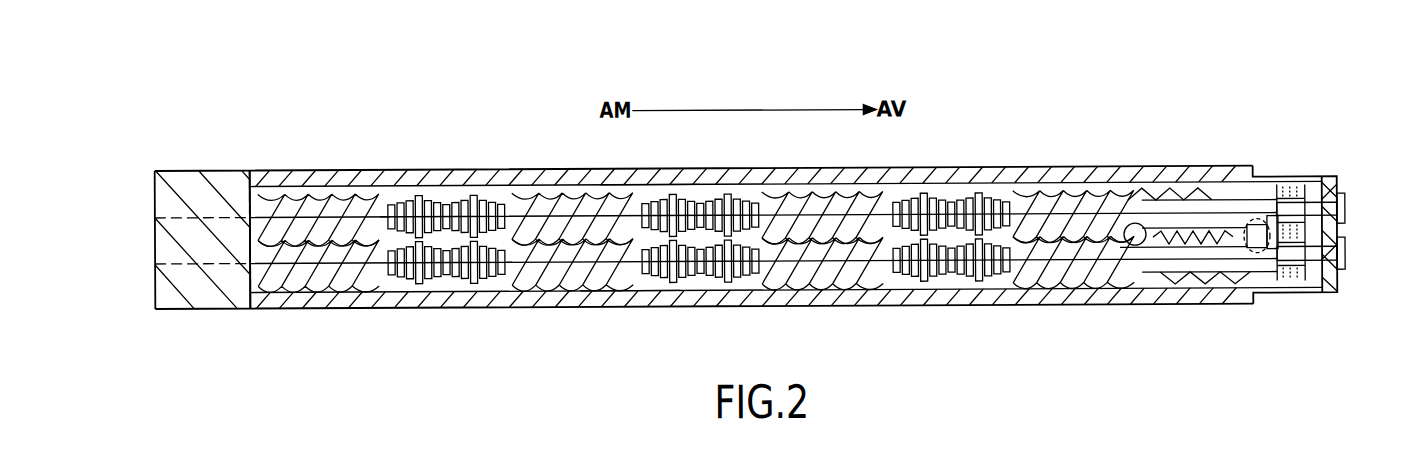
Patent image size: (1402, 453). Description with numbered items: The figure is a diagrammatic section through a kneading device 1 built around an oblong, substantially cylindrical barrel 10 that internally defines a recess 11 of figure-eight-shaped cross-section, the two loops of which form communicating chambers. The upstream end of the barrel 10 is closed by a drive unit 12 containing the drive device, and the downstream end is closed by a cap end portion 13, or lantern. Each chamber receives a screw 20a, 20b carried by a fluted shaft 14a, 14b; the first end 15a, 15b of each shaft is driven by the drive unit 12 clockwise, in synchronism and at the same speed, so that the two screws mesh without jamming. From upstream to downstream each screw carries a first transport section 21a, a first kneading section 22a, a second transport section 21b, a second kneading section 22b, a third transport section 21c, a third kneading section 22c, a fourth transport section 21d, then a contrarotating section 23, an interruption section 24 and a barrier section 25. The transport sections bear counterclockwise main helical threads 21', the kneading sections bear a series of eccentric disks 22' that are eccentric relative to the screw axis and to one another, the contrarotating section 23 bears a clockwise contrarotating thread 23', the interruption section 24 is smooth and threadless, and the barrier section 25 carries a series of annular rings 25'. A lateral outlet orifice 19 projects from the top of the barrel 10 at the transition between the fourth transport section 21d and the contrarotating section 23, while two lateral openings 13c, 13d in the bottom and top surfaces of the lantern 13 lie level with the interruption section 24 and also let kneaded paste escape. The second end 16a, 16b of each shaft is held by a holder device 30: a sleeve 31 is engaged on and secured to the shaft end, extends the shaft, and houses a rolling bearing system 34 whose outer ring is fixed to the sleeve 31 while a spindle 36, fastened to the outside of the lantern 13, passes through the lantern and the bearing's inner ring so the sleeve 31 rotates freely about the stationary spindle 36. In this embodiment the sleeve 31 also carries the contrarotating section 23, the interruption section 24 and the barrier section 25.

The kneading device 1 is at (1033, 88).
The barrel 10 is at (415, 182).
The recess 11 is at (772, 192).
The drive unit 12 is at (195, 190).
The cap end portion 13 is at (1300, 300).
The first lateral opening 13c is at (1258, 258).
The second lateral opening 13d is at (1257, 236).
The fluted shaft 14a is at (642, 190).
The fluted shaft 14b is at (630, 290).
The first end of shaft 15a is at (249, 215).
The first end of shaft 15b is at (247, 280).
The second end of shaft 16a is at (1225, 212).
The second end of shaft 16b is at (1215, 280).
The lateral outlet orifice 19 is at (1133, 248).
The screw 20a is at (389, 205).
The screw 20b is at (515, 287).
The first transport section 21a is at (318, 195).
The second transport section 21b is at (565, 195).
The third transport section 21c is at (822, 195).
The fourth transport section 21d is at (1078, 195).
The main helical threads 21' is at (696, 292).
The first kneading section 22a is at (452, 200).
The second kneading section 22b is at (705, 200).
The third kneading section 22c is at (950, 200).
The eccentric disks 22' is at (699, 294).
The contrarotating section 23 is at (1183, 188).
The contrarotating helical thread 23' is at (1196, 309).
The interruption section 24 is at (1292, 200).
The barrier section 25 is at (1316, 183).
The annular rings 25' is at (1327, 290).
The holder device 30 is at (1295, 128).
The sleeve 31 is at (1278, 198).
The rolling bearing system 34 is at (1325, 210).
The spindle 36 is at (1346, 225).